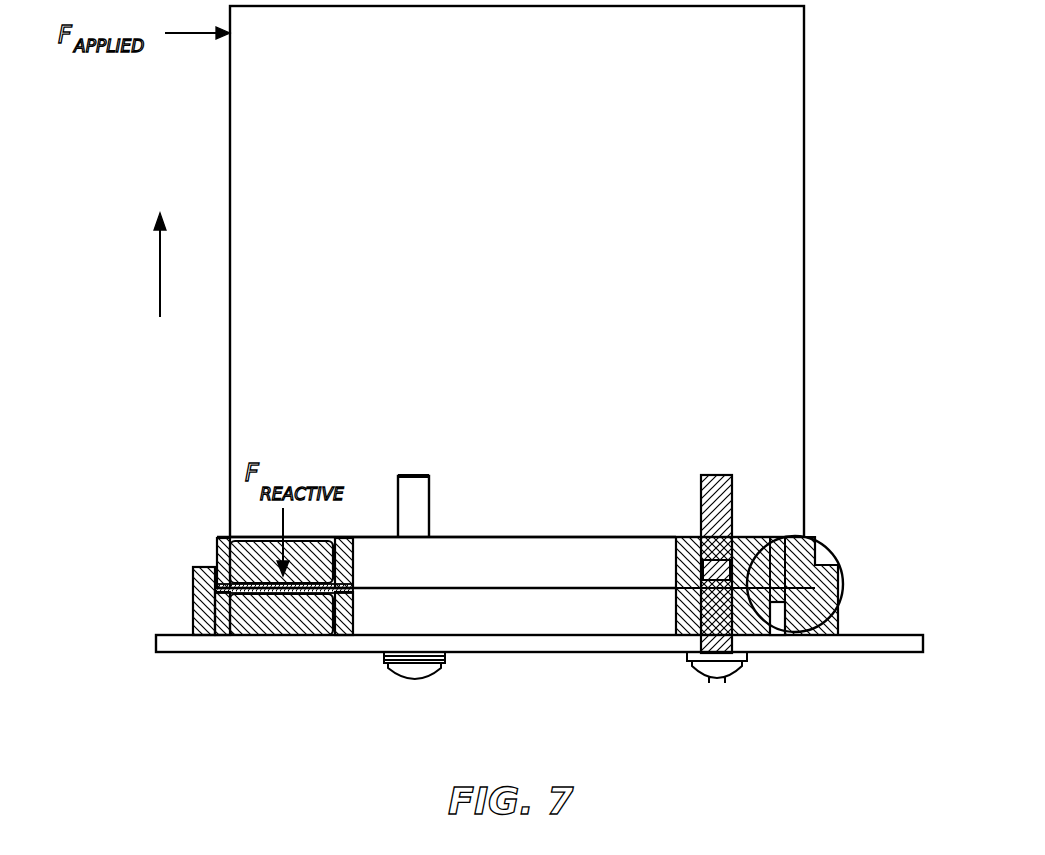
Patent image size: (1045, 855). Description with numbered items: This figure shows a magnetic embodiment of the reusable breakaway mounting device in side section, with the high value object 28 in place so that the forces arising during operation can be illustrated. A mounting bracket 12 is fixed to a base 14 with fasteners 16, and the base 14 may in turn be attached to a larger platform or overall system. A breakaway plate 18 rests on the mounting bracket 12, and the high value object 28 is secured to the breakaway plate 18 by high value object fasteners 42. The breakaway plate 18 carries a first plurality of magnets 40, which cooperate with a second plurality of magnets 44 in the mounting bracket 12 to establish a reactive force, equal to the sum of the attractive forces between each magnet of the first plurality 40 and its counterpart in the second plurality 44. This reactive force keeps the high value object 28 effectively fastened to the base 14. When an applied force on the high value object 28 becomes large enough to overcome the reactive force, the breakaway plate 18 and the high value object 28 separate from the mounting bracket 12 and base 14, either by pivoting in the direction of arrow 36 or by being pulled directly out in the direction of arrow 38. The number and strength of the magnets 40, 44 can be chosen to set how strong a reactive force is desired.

The mounting bracket 12 is at (212, 622).
The base 14 is at (571, 643).
The fasteners 16 is at (420, 499).
The breakaway plate 18 is at (755, 540).
The high value object 28 is at (559, 178).
The arrow 36 is at (828, 548).
The arrow 38 is at (160, 273).
The first plurality of magnets 40 is at (232, 545).
The high value object fasteners 42 is at (700, 497).
The second plurality of magnets 44 is at (286, 620).